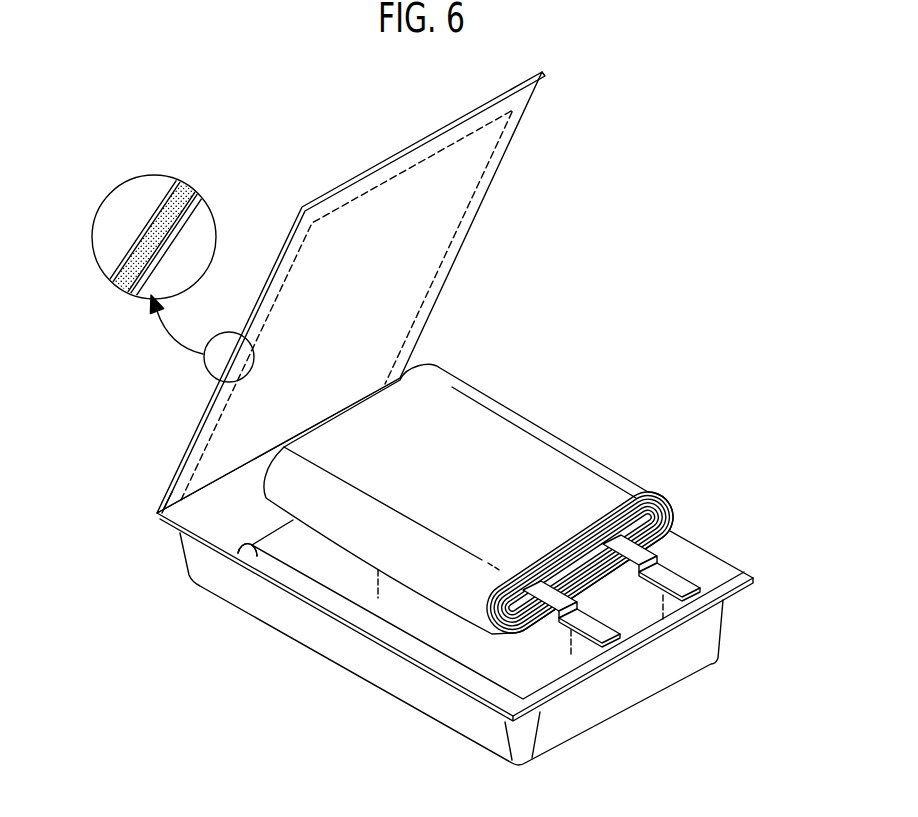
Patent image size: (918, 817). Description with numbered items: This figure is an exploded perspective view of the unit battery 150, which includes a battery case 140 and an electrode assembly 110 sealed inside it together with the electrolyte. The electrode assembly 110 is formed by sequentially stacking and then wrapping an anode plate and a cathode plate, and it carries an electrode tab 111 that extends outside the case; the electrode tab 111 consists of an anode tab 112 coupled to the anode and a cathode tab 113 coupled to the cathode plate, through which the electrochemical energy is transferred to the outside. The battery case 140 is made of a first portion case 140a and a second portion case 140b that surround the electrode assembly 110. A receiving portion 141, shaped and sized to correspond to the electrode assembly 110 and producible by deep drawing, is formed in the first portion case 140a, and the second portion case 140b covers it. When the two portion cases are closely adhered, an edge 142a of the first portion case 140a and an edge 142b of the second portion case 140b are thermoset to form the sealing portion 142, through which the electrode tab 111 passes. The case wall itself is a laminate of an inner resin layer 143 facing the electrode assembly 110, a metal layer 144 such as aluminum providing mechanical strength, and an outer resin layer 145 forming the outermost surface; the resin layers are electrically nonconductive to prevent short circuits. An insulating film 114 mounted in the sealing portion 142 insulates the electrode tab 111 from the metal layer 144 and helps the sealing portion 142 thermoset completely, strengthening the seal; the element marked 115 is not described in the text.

The electrode assembly 110 is at (580, 418).
The electrode tab 111 is at (827, 632).
The anode tab 112 is at (624, 636).
The cathode tab 113 is at (731, 592).
The film 114 is at (574, 616).
The second electrode tab 115 is at (667, 562).
The battery case 140 is at (264, 646).
The first portion case 140a is at (370, 683).
The second portion case 140b is at (203, 412).
The receiving portion 141 is at (500, 663).
The sealing portion 142 is at (106, 615).
The edge of the first portion case 142a is at (240, 549).
The edge of the second portion case 142b is at (170, 507).
The inner resin layer 143 is at (208, 193).
The metal layer 144 is at (194, 186).
The outer resin layer 145 is at (172, 177).
The unit battery 150 is at (759, 135).